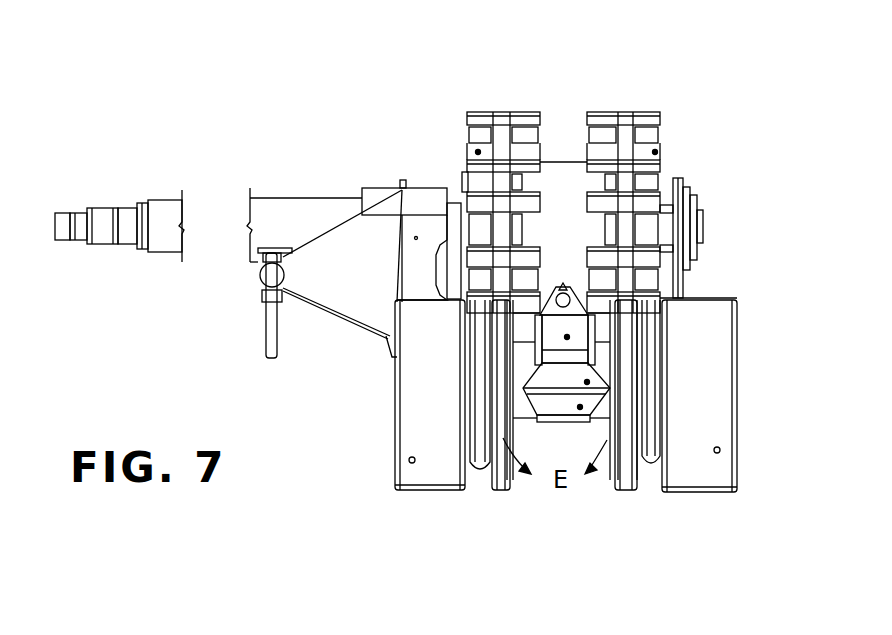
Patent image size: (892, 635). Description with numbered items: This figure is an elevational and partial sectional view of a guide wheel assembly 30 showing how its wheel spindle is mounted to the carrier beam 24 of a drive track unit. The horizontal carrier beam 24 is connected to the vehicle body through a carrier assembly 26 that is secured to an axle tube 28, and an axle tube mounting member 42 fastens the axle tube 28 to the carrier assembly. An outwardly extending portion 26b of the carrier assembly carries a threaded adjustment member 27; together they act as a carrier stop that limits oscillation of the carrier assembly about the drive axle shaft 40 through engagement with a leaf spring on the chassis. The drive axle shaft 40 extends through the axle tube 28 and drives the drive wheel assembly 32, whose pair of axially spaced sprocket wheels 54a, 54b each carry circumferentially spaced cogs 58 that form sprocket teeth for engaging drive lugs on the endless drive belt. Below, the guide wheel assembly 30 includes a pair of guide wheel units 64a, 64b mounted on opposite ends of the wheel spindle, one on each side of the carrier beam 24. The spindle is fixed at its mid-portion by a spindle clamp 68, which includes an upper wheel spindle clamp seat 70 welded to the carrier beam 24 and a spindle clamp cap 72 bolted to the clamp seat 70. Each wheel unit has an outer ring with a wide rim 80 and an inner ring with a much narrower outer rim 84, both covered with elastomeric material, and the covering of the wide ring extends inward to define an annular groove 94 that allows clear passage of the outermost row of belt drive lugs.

The carrier beam 24 is at (567, 337).
The carrier assembly 26 is at (416, 230).
The outwardly extending portion of carrier assembly 26b is at (342, 273).
The threaded adjustment member 27 is at (265, 328).
The axle tube 28 is at (302, 200).
The guide wheel assembly 30 is at (502, 482).
The drive wheel assembly 32 is at (527, 90).
The drive axle shaft 40 is at (97, 205).
The axle tube mounting member 42 is at (398, 186).
The sprocket wheel 54a is at (628, 112).
The sprocket wheel 54b is at (478, 112).
The cog 58 is at (478, 152).
The guide wheel unit 64a is at (694, 505).
The guide wheel unit 64b is at (437, 500).
The spindle clamp 68 is at (573, 436).
The upper wheel spindle clamp seat 70 is at (587, 382).
The spindle clamp cap 72 is at (580, 407).
The wide rim 80 is at (410, 462).
The narrow outer rim 84 is at (624, 492).
The annular groove 94 is at (480, 465).